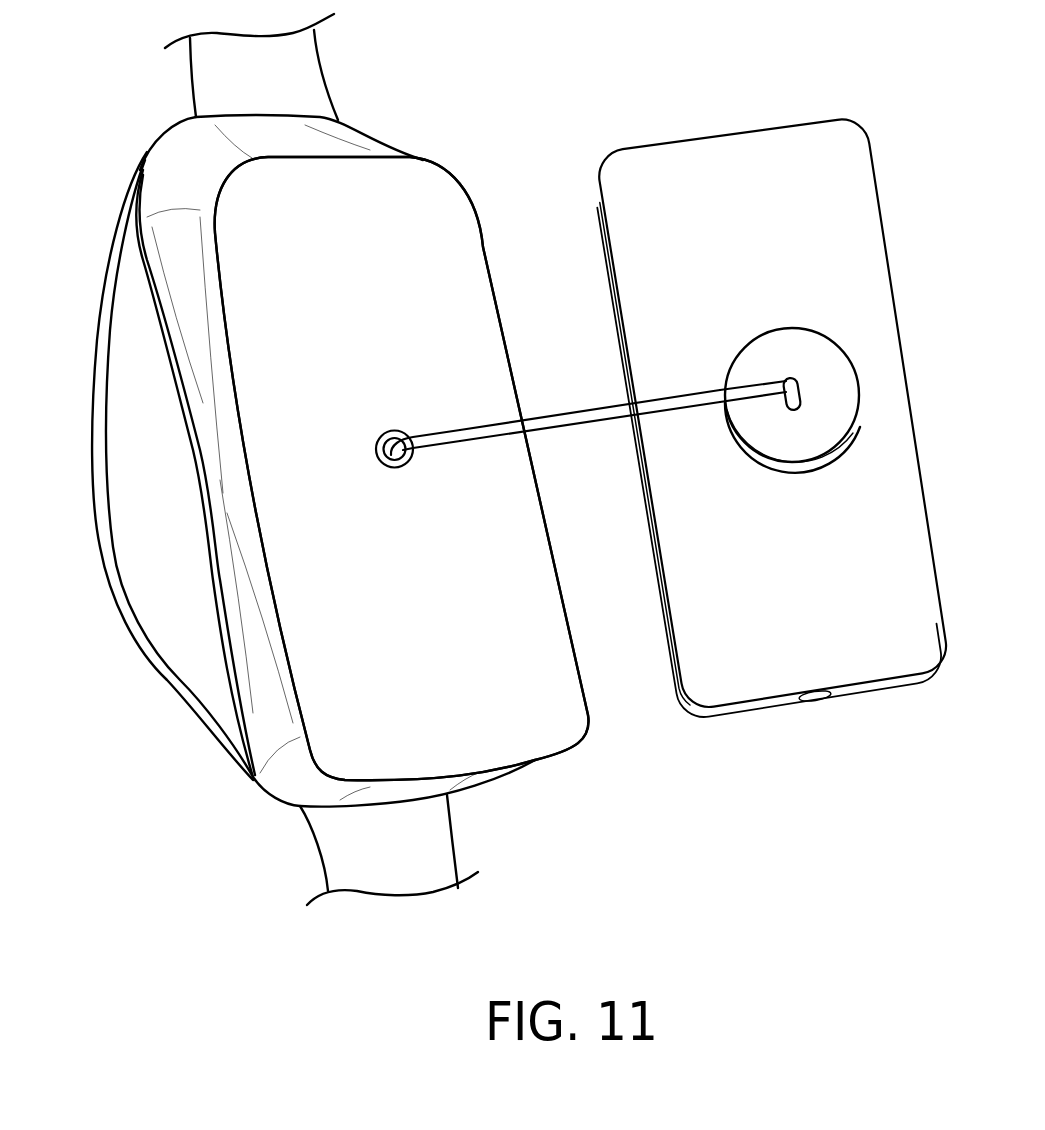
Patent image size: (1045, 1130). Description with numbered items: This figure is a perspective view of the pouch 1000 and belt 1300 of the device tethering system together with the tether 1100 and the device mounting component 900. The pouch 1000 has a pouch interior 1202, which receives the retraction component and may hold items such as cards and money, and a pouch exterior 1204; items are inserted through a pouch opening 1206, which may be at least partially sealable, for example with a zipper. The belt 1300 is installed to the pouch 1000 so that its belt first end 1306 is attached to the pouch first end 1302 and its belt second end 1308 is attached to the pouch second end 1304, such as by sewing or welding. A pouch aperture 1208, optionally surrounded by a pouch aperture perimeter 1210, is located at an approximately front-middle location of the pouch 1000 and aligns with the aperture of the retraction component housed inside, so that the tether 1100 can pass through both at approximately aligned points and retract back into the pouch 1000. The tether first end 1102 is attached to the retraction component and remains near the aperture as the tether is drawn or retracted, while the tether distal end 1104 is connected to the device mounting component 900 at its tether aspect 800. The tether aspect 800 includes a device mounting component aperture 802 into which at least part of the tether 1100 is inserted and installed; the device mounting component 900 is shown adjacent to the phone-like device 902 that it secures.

The belt 1300 is at (308, 49).
The pouch first end 1302 is at (267, 134).
The pouch second end 1304 is at (417, 788).
The belt first end 1306 is at (197, 107).
The belt second end 1308 is at (328, 865).
The pouch 1000 is at (407, 196).
The pouch interior 1202 is at (165, 466).
The pouch exterior 1204 is at (355, 320).
The pouch opening 1206 is at (128, 423).
The pouch aperture 1208 is at (397, 463).
The pouch aperture perimeter 1210 is at (383, 437).
The tether 1100 is at (588, 382).
The tether first end 1102 is at (420, 440).
The tether distal end 1104 is at (767, 395).
The mobile phone 902 is at (847, 193).
The tether aspect 800 is at (810, 344).
The device mounting component aperture 802 is at (797, 409).
The device mounting component 900 is at (808, 478).